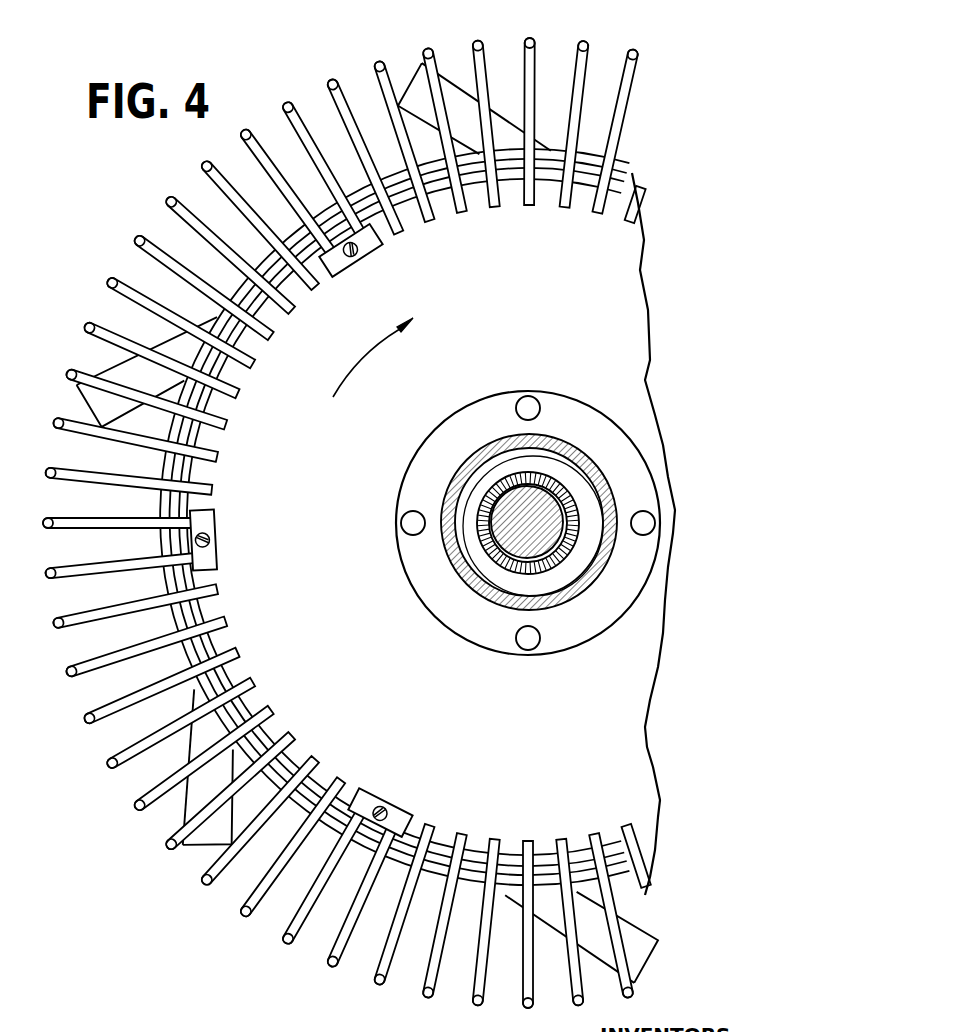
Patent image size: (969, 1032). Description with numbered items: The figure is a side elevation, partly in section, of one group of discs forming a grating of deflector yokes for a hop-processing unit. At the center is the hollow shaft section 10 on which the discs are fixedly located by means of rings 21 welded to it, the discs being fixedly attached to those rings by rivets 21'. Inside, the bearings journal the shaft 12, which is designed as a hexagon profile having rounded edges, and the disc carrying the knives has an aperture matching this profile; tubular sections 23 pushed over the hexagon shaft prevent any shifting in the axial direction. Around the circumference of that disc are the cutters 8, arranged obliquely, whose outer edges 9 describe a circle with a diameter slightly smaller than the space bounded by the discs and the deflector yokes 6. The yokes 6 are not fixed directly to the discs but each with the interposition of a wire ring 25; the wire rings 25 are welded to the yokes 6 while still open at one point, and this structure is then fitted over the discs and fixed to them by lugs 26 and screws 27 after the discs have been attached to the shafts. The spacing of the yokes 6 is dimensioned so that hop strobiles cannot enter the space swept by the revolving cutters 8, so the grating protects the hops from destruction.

The yoke 6 is at (188, 238).
The cutter 8 is at (431, 121).
The outer edge 9 is at (82, 391).
The hollow shaft section 10 is at (464, 574).
The shaft 12 is at (546, 502).
The ring 21 is at (515, 523).
The rivet 21' is at (511, 523).
The tubular section 23 is at (490, 548).
The wire ring 25 is at (197, 612).
The lug 26 is at (214, 556).
The screw 27 is at (209, 534).